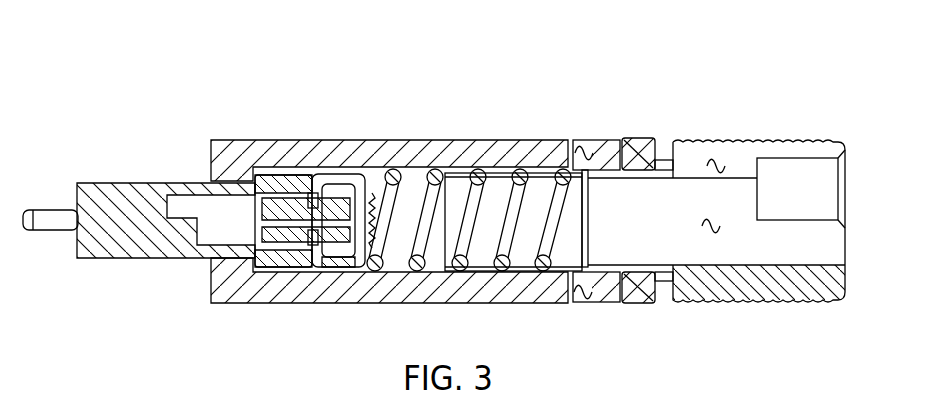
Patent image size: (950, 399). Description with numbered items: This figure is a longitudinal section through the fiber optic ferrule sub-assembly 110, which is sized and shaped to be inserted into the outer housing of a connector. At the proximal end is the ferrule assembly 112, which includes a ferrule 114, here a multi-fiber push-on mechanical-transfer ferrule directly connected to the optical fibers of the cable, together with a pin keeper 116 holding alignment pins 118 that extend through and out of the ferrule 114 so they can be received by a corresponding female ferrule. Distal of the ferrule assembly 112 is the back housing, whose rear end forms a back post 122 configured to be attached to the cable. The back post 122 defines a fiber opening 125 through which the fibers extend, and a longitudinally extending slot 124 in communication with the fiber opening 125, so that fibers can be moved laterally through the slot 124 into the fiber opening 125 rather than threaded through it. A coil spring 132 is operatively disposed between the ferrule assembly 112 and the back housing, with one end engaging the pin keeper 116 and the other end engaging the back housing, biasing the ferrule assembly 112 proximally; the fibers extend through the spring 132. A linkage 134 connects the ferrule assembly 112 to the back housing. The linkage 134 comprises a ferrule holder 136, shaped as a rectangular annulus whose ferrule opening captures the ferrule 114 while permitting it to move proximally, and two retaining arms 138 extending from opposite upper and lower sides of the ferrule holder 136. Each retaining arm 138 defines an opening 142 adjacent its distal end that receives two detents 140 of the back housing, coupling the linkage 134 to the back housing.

The fiber optic ferrule sub-assembly 110 is at (536, 79).
The ferrule assembly 112 is at (309, 163).
The ferrule 114 is at (125, 205).
The pin keeper 116 is at (362, 163).
The alignment pins 118 is at (45, 224).
The back post 122 is at (775, 287).
The slot 124 is at (717, 160).
The fiber opening 125 is at (712, 229).
The spring 132 is at (439, 163).
The linkage 134 is at (306, 305).
The ferrule holder 136 is at (226, 152).
The retaining arms 138 is at (519, 155).
The detents 140 is at (613, 150).
The opening 142 is at (586, 145).